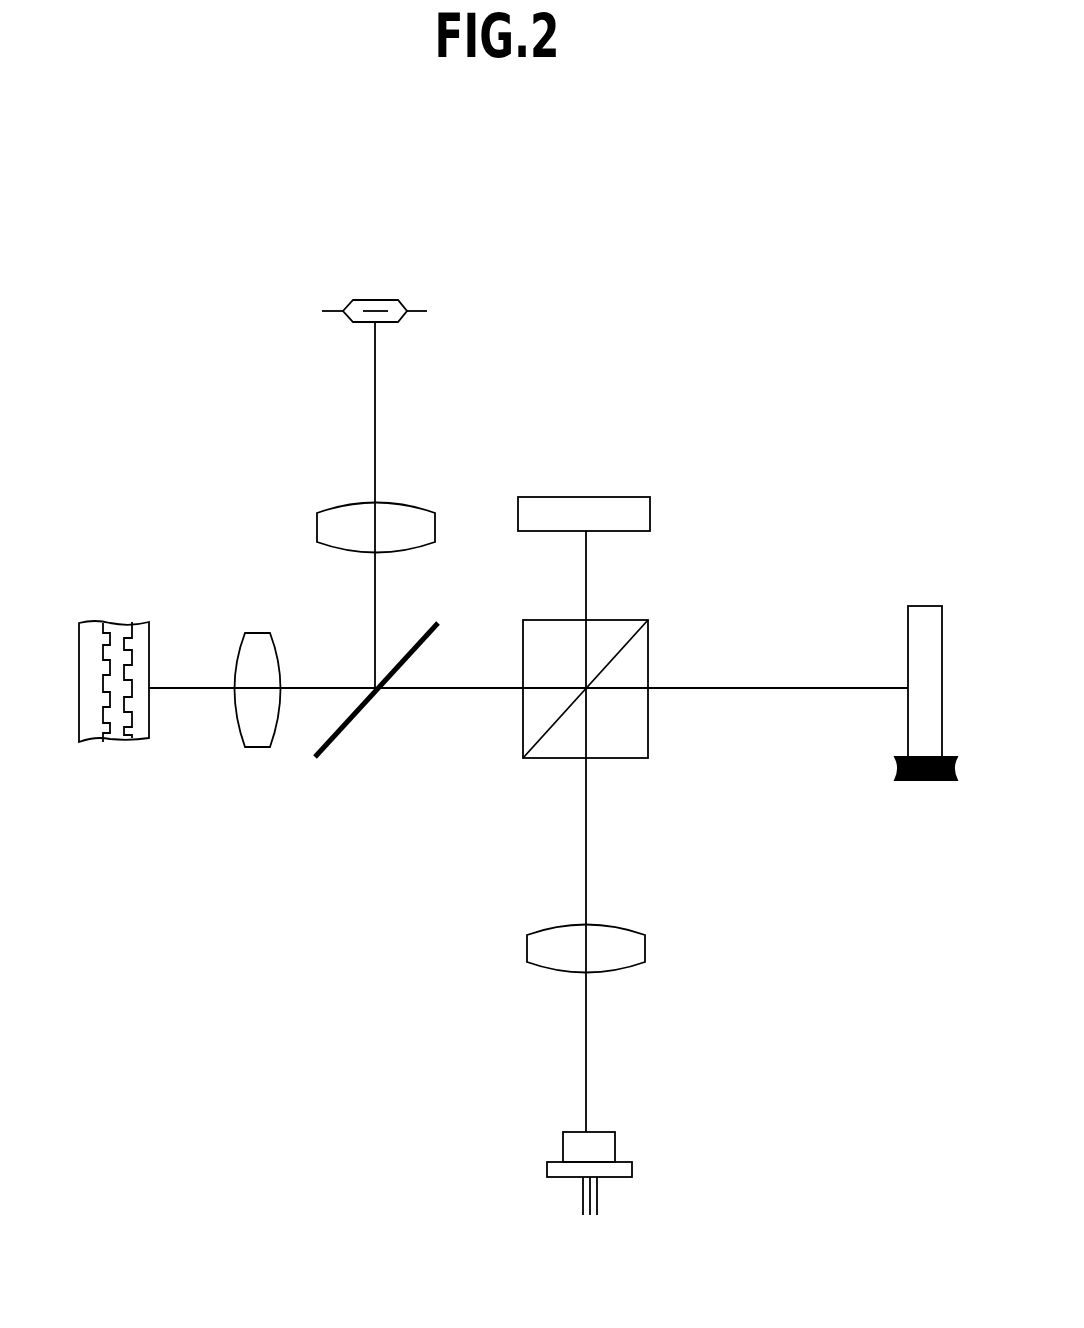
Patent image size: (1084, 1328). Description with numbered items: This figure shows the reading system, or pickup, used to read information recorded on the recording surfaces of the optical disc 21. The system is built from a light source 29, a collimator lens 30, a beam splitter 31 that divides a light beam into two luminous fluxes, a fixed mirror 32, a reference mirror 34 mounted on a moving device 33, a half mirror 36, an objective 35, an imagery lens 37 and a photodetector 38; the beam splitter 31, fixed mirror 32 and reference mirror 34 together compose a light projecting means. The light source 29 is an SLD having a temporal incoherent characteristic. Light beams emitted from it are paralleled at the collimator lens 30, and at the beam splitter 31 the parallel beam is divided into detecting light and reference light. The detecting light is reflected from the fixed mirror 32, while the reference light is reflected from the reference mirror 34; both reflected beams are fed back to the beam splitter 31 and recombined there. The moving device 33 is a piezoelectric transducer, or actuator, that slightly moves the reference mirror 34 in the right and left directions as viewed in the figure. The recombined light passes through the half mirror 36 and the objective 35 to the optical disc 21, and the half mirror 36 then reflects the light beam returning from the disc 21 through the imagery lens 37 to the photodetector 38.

The optical disc 21 is at (148, 642).
The light source 29 is at (602, 1148).
The collimator lens 30 is at (645, 953).
The beam splitter 31 is at (630, 717).
The fixed mirror 32 is at (633, 520).
The moving device 33 is at (918, 780).
The reference mirror 34 is at (932, 618).
The objective 35 is at (262, 727).
The half mirror 36 is at (345, 730).
The imagery lens 37 is at (405, 507).
The photodetector 38 is at (385, 300).